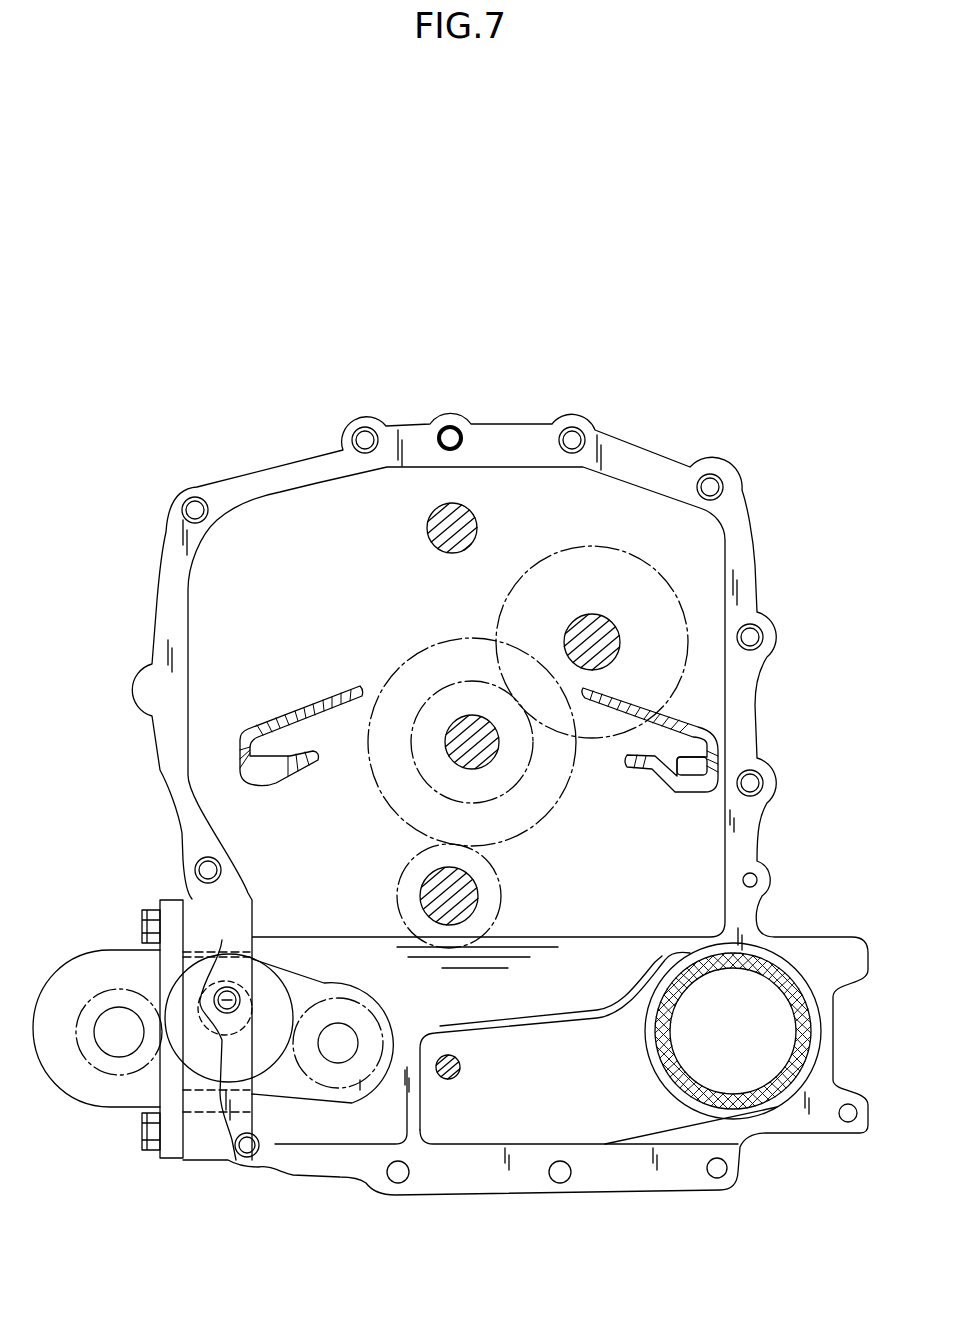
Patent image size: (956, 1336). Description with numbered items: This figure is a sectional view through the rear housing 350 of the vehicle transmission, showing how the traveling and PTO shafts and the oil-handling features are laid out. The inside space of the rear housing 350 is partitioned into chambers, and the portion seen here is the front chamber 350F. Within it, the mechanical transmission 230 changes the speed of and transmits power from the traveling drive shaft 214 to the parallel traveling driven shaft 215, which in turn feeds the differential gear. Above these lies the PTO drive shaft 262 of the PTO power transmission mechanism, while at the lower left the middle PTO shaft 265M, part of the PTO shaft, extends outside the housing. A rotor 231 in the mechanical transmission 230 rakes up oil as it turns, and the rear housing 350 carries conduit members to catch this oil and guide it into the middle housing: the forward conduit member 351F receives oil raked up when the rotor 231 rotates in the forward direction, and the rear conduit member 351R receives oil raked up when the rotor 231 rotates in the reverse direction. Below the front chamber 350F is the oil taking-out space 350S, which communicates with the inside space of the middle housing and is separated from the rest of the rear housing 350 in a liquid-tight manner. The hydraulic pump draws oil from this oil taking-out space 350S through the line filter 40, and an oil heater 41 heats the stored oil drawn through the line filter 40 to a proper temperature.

The rear housing 350 is at (650, 463).
The front chamber 350F is at (442, 1010).
The oil taking-out space 350S is at (532, 1102).
The line filter 40 is at (783, 1105).
The oil heater 41 is at (457, 1072).
The mechanical transmission 230 is at (518, 542).
The rotor 231 is at (433, 612).
The traveling drive shaft 214 is at (607, 630).
The traveling driven shaft 215 is at (466, 937).
The PTO drive shaft 262 is at (457, 505).
The rear conduit member 351R is at (290, 684).
The forward conduit member 351F is at (706, 718).
The middle PTO shaft 265M is at (107, 1037).